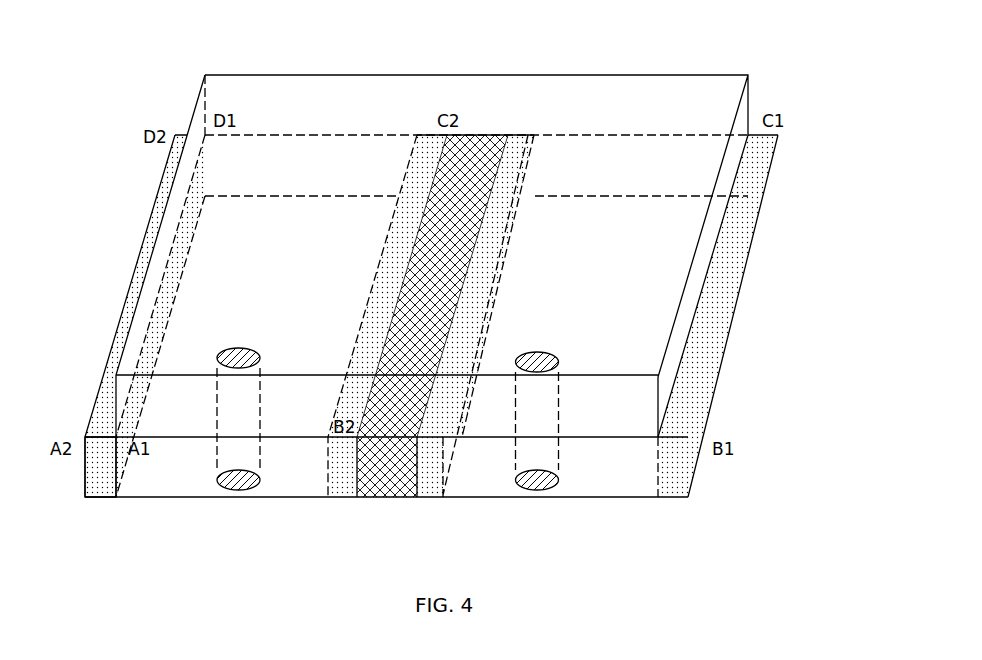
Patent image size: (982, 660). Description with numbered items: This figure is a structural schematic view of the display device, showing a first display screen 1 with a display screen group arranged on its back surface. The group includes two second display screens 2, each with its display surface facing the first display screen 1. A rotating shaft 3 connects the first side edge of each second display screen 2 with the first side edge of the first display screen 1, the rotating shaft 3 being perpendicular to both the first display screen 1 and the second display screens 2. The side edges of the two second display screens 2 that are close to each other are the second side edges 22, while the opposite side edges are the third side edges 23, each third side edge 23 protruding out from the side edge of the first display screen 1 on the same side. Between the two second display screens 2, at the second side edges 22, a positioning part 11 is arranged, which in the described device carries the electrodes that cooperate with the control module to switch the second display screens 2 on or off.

The first display screen 1 is at (748, 75).
The second display screen 2 is at (778, 137).
The rotating shaft 3 is at (573, 545).
The positioning part 11 is at (388, 477).
The second side edge 22 is at (450, 545).
The third side edge 23 is at (692, 545).